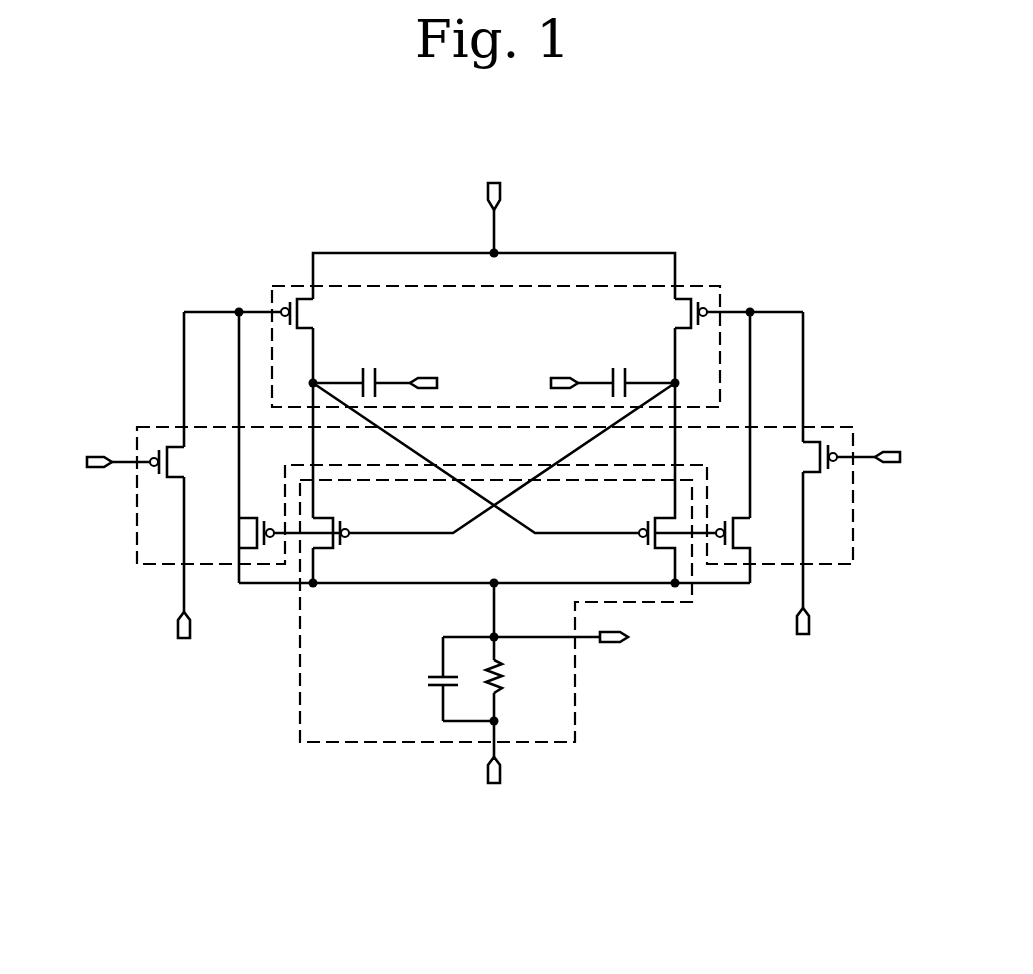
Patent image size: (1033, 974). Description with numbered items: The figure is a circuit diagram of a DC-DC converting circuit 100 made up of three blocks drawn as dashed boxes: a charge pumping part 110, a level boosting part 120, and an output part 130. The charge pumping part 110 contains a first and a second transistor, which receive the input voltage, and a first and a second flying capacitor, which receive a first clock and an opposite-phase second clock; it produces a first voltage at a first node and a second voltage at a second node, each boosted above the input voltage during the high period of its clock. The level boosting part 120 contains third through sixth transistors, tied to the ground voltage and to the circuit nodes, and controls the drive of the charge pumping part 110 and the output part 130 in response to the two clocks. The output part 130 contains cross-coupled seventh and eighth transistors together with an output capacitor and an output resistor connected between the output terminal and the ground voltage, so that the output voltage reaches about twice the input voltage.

The DC-DC converting circuit 100 is at (659, 167).
The charge pumping part 110 is at (697, 286).
The level boosting part 120 is at (823, 427).
The output part 130 is at (575, 713).